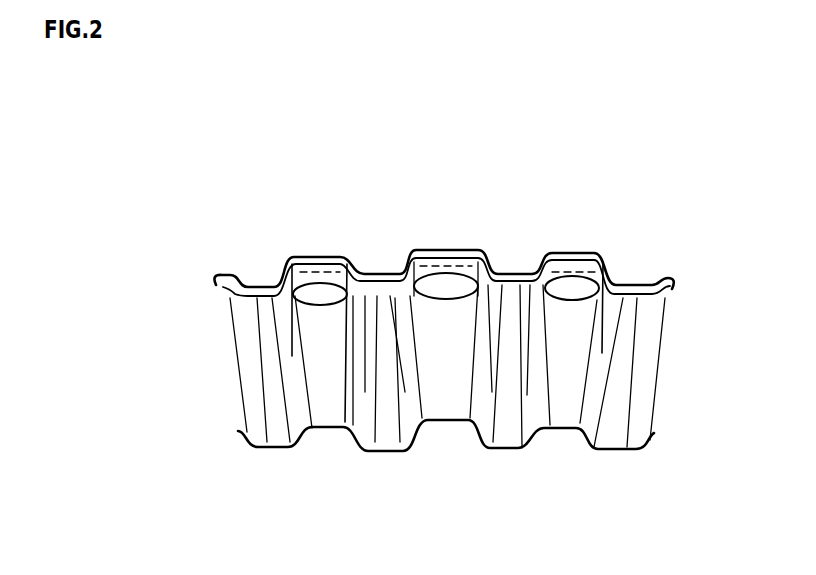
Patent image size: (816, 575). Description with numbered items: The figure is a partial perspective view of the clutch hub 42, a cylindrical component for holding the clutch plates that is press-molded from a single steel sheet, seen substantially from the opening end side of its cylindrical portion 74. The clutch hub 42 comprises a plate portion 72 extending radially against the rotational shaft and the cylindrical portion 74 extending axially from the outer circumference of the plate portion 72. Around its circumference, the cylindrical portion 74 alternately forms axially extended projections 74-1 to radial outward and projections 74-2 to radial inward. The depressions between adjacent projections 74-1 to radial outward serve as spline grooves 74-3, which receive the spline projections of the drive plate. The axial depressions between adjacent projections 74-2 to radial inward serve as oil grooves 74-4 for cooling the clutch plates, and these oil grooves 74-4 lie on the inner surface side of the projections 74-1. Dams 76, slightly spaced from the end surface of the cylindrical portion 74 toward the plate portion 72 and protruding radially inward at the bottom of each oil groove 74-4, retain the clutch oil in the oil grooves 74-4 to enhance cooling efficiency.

The clutch hub 42 is at (640, 249).
The plate portion 72 is at (528, 463).
The cylindrical portion 74 is at (447, 295).
The projections to radial outward 74-1 is at (328, 250).
The projections to radial inward 74-2 is at (383, 275).
The spline grooves 74-3 is at (368, 264).
The oil grooves 74-4 is at (525, 331).
The dams 76 is at (448, 266).